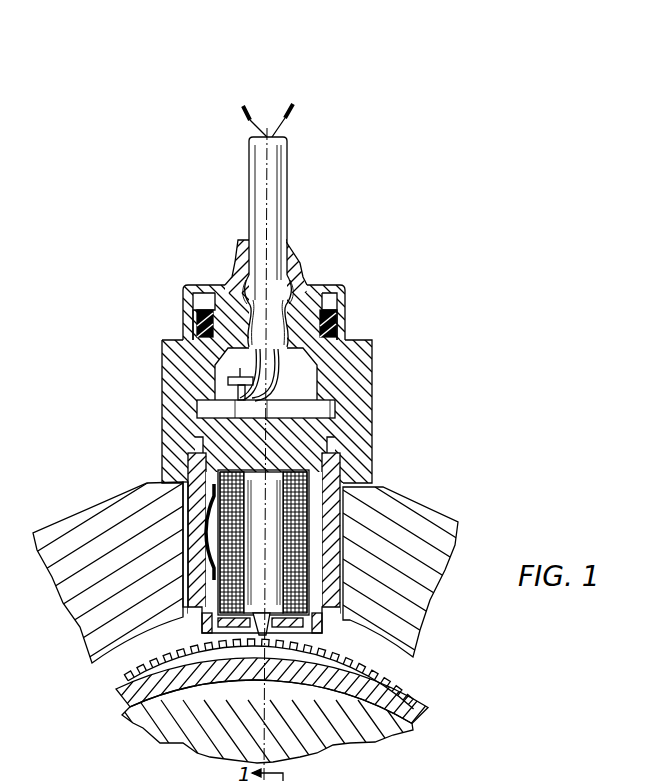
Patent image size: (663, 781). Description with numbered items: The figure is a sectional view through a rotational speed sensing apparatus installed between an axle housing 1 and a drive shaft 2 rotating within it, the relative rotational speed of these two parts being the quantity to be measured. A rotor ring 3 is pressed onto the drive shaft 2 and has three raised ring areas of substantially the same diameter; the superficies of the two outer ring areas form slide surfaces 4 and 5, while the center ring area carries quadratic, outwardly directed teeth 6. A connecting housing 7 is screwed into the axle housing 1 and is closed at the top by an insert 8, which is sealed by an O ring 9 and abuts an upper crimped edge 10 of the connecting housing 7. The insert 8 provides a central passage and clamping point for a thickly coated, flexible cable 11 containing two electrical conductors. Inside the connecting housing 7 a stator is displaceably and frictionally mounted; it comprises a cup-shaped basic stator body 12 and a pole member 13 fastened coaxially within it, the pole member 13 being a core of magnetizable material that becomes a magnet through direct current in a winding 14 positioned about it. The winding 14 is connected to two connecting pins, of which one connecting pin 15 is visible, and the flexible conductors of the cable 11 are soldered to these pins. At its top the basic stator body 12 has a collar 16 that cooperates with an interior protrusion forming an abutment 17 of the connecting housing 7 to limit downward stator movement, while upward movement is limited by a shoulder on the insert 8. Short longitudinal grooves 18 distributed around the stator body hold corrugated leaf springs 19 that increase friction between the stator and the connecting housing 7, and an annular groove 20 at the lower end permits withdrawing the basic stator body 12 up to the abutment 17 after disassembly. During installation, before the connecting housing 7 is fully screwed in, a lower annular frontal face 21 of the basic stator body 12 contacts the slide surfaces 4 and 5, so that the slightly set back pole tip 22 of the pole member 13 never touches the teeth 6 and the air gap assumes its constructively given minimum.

The axle housing 1 is at (437, 530).
The drive shaft 2 is at (348, 730).
The rotor ring 3 is at (413, 730).
The slide surface 4 is at (120, 684).
The slide surface 5 is at (268, 710).
The teeth 6 is at (122, 696).
The connecting housing 7 is at (357, 388).
The insert 8 is at (293, 260).
The O ring 9 is at (336, 322).
The upper crimped edge 10 is at (348, 293).
The flexible cable 11 is at (272, 185).
The basic stator body 12 is at (310, 469).
The pole member 13 is at (273, 549).
The winding 14 is at (295, 510).
The connecting pin 15 is at (235, 383).
The collar 16 is at (195, 427).
The abutment 17 is at (198, 450).
The longitudinal groove 18 is at (210, 502).
The corrugated leaf spring 19 is at (203, 555).
The annular groove 20 is at (203, 625).
The lower annular frontal face 21 is at (318, 618).
The pole tip 22 is at (258, 640).